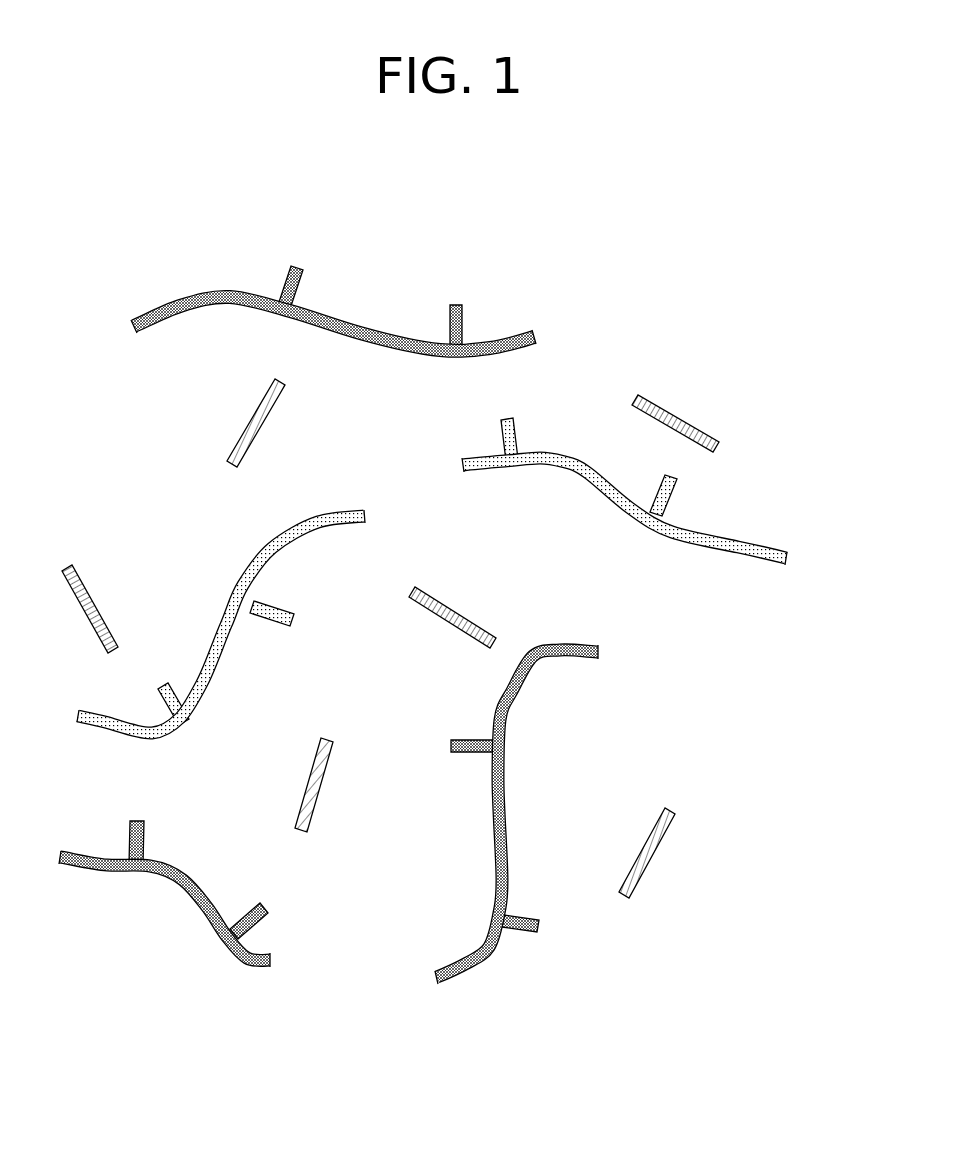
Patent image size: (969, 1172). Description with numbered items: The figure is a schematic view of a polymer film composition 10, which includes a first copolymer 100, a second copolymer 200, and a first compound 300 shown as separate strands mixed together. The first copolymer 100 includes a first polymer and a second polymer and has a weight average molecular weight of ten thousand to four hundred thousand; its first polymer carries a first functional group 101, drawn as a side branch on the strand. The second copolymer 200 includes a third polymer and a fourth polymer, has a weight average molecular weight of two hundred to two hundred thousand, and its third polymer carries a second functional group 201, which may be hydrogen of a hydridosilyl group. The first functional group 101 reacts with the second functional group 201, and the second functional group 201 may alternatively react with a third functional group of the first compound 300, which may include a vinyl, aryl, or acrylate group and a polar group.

The polymer film composition 10 is at (815, 248).
The first copolymer 100 is at (537, 337).
The first functional group 101 is at (455, 303).
The second copolymer 200 is at (790, 559).
The second functional group 201 is at (673, 490).
The first compound 300 is at (657, 845).